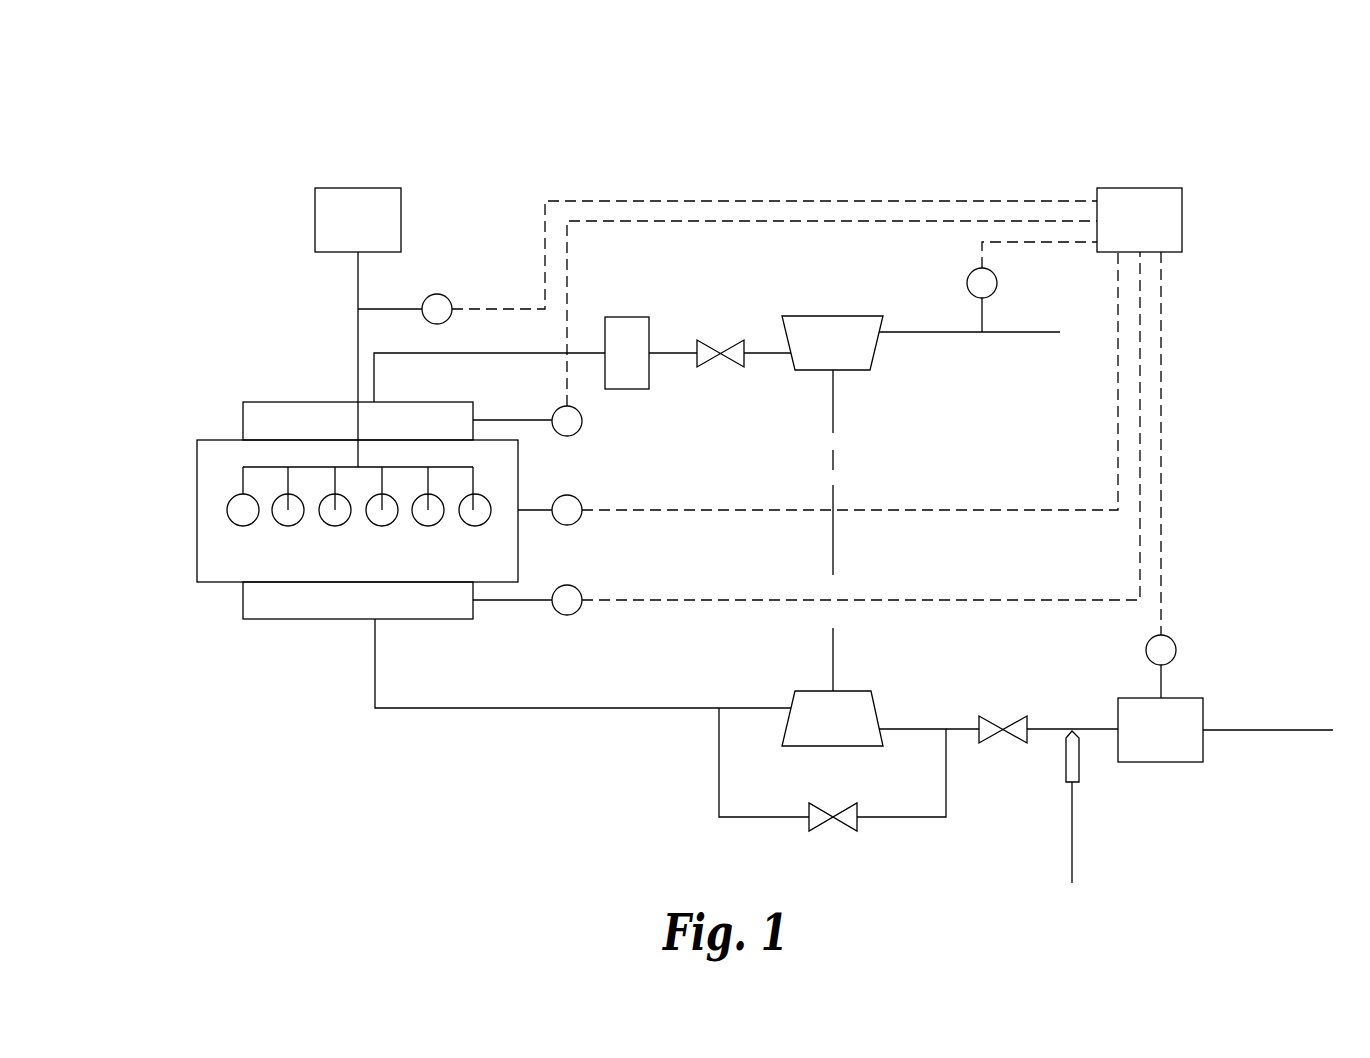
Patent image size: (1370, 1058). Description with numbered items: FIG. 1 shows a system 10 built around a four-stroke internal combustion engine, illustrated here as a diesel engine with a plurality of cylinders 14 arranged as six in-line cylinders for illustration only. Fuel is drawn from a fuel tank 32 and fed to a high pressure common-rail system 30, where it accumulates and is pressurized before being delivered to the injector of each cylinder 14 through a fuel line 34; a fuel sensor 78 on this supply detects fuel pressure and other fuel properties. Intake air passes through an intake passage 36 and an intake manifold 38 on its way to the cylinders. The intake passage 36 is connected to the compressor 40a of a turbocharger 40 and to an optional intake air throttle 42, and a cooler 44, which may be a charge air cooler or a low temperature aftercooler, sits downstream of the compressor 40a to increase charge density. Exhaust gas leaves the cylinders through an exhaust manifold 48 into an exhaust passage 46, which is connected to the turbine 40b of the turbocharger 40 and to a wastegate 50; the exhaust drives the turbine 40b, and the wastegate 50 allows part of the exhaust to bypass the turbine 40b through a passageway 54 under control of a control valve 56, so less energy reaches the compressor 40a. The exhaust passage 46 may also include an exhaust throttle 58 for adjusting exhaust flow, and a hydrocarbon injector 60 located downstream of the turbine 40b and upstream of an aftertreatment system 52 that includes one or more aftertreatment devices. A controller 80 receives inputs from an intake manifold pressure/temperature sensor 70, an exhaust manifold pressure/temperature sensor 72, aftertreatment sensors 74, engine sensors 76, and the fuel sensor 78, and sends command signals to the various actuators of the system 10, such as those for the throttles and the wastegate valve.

The system 10 is at (583, 124).
The cylinders 14 is at (227, 508).
The high pressure common-rail system 30 is at (280, 462).
The fuel tank 32 is at (371, 233).
The fuel line 34 is at (240, 482).
The intake passage 36 is at (950, 333).
The intake manifold 38 is at (322, 401).
The turbocharger 40 is at (858, 452).
The compressor 40a is at (794, 316).
The turbine 40b is at (790, 694).
The intake air throttle 42 is at (728, 360).
The cooler 44 is at (630, 316).
The exhaust passage 46 is at (442, 710).
The exhaust manifold 48 is at (262, 620).
The wastegate 50 is at (752, 818).
The aftertreatment system 52 is at (1173, 743).
The passageway 54 is at (914, 818).
The control valve 56 is at (824, 832).
The exhaust throttle 58 is at (998, 717).
The hydrocarbon injector 60 is at (1064, 765).
The intake manifold pressure/temperature sensor 70 is at (578, 432).
The exhaust manifold pressure/temperature sensor 72 is at (574, 615).
The aftertreatment sensors 74 is at (1178, 650).
The engine sensors 76 is at (565, 525).
The fuel sensor 78 is at (441, 294).
The controller 80 is at (1153, 233).